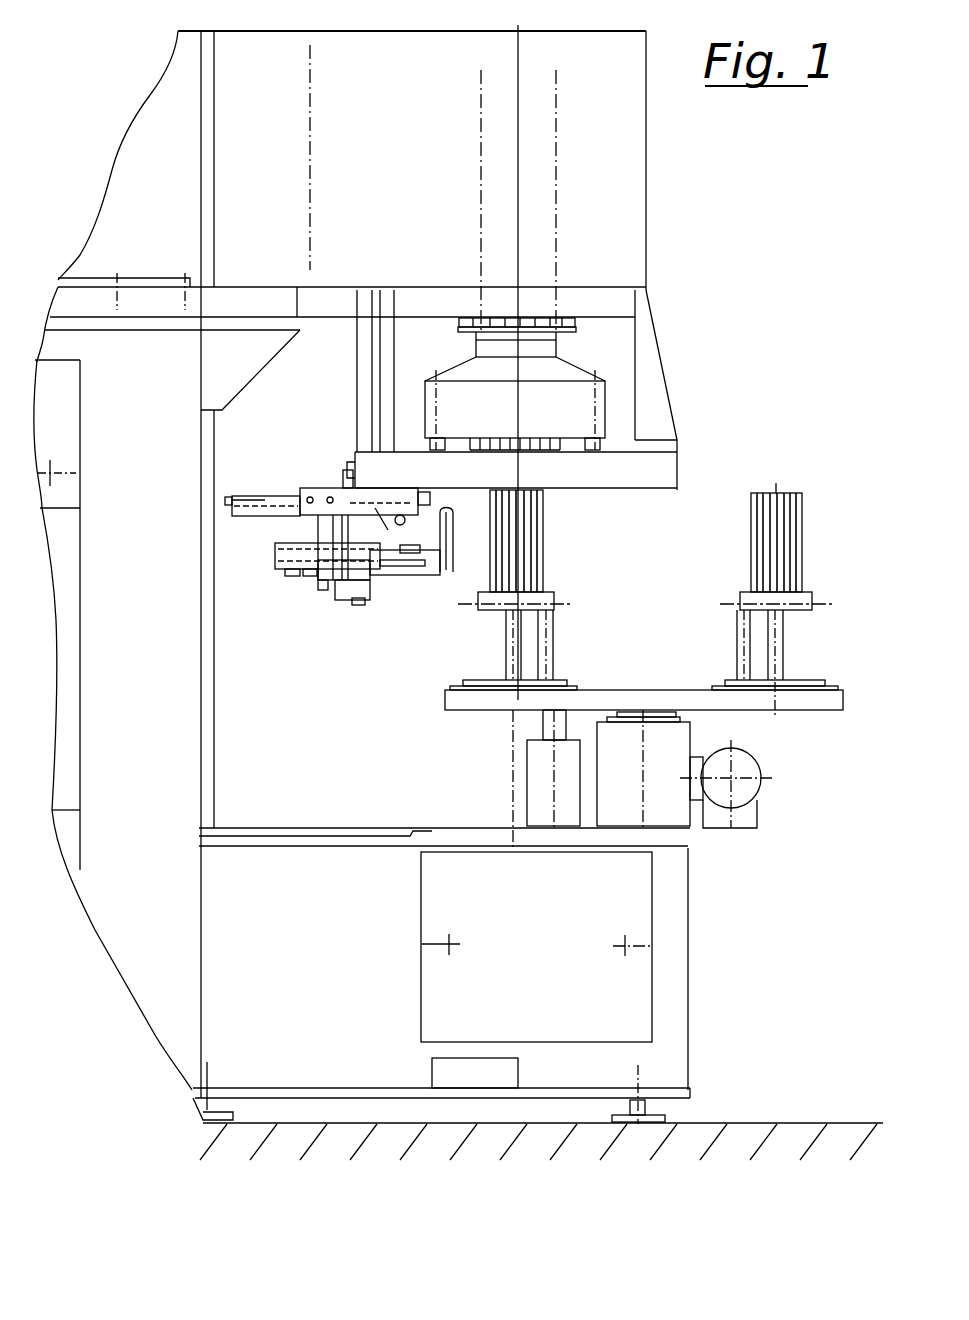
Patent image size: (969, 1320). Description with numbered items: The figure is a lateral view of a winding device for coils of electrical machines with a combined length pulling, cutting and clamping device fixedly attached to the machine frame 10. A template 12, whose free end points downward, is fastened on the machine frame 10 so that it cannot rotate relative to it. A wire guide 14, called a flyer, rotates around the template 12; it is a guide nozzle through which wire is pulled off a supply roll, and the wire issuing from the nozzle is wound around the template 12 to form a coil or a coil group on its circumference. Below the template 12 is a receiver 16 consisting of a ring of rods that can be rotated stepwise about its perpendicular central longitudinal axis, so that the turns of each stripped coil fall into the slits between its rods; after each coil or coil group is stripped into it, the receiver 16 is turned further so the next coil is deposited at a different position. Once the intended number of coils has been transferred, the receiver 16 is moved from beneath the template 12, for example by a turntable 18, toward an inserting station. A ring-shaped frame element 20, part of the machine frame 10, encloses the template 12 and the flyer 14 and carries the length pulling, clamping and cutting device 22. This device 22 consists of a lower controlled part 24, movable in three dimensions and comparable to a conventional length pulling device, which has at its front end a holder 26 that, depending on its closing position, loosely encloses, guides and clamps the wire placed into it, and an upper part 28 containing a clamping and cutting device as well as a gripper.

The machine frame 10 is at (180, 728).
The template 12 is at (555, 450).
The wire guide 14 is at (597, 450).
The receiver 16 is at (543, 570).
The turntable 18 is at (680, 690).
The ring-shaped frame element 20 is at (370, 467).
The length pulling, clamping and cutting device 22 is at (313, 582).
The lower controlled part 24 is at (376, 586).
The holder 26 is at (456, 576).
The upper part 28 is at (275, 508).